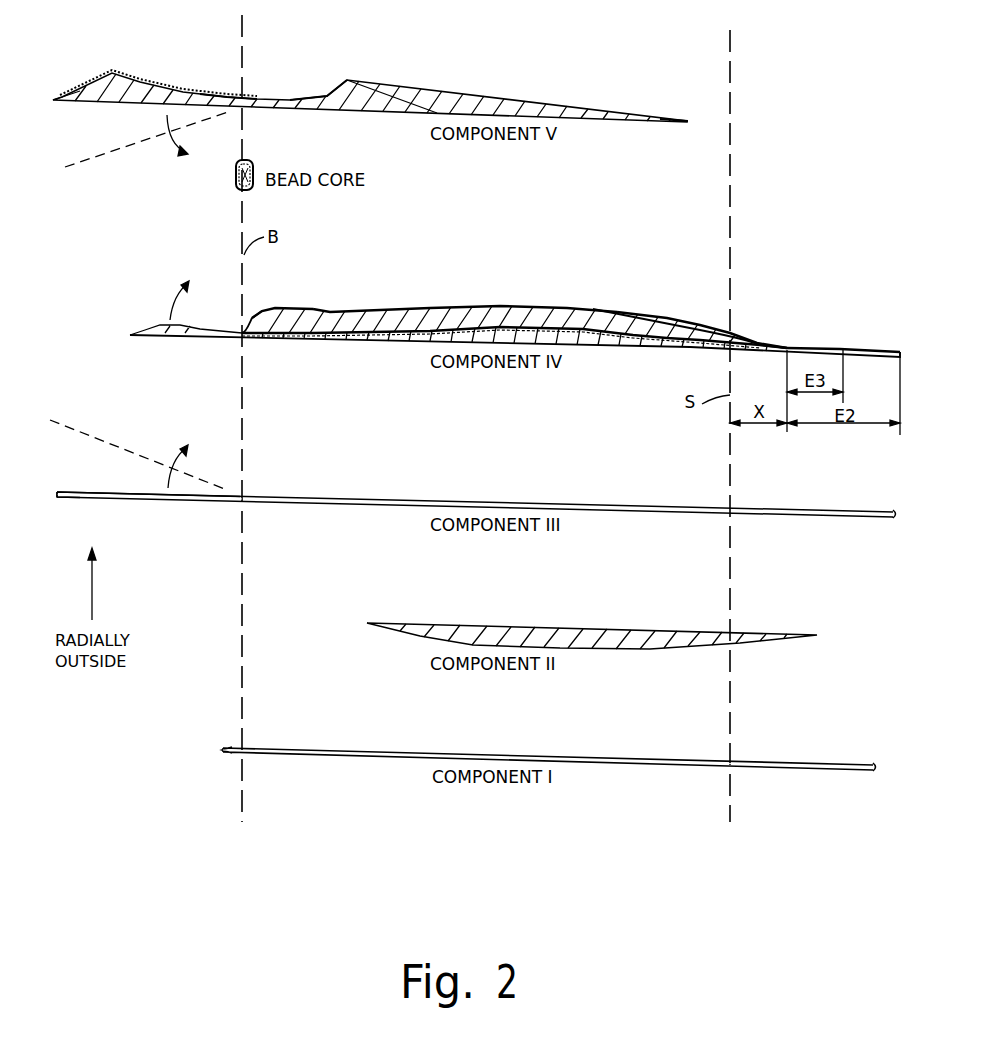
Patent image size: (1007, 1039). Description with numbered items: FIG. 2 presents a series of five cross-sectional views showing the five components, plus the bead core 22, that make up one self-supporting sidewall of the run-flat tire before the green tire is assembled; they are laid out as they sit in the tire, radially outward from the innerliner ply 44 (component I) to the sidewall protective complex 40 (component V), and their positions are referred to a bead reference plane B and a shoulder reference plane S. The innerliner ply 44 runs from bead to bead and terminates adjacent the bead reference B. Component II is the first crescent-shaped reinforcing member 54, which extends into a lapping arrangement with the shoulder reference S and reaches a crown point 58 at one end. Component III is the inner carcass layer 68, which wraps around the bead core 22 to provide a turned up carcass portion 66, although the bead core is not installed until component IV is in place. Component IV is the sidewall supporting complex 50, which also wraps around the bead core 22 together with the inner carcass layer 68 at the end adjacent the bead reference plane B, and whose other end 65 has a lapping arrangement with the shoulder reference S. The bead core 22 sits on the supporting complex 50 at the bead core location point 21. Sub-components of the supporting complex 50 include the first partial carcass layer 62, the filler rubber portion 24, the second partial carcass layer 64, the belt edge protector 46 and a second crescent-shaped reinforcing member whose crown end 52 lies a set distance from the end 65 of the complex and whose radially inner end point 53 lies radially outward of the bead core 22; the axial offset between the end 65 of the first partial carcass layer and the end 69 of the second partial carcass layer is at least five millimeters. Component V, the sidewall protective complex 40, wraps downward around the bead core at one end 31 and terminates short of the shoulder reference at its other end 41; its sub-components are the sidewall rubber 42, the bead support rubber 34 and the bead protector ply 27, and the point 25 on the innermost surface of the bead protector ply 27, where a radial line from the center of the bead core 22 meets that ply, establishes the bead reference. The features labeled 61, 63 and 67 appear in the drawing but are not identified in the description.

The bead core location point 21 is at (240, 332).
The bead core 22 is at (232, 173).
The filler rubber portion 24 is at (323, 312).
The point on innermost surface of bead protector ply 25 is at (213, 85).
The bead protector ply 27 is at (143, 82).
The end of sidewall protective complex 31 is at (53, 98).
The bead support rubber 34 is at (297, 93).
The sidewall protective complex 40 is at (527, 97).
The other end of sidewall protective complex 41 is at (690, 120).
The sidewall rubber 42 is at (397, 84).
The innerliner ply 44 is at (652, 760).
The belt edge protector 46 is at (667, 318).
The sidewall supporting complex 50 is at (322, 342).
The end of second crescent-shaped reinforcing member 52 is at (783, 356).
The end point of second reinforcing member 53 is at (362, 342).
The first crescent-shaped reinforcing member 54 is at (577, 633).
The crown point of first reinforcing member 58 is at (615, 344).
The bead filler edge 61 is at (275, 310).
The first partial carcass layer 62 is at (541, 308).
The component III end 63 is at (55, 492).
The second partial carcass layer 64 is at (387, 306).
The end of supporting complex (first partial carcass layer end) 65 is at (900, 364).
The turned up carcass portion 66 is at (97, 490).
The bead toe portion 67 is at (269, 336).
The inner carcass layer 68 is at (442, 500).
The end of second partial carcass layer 69 is at (840, 350).